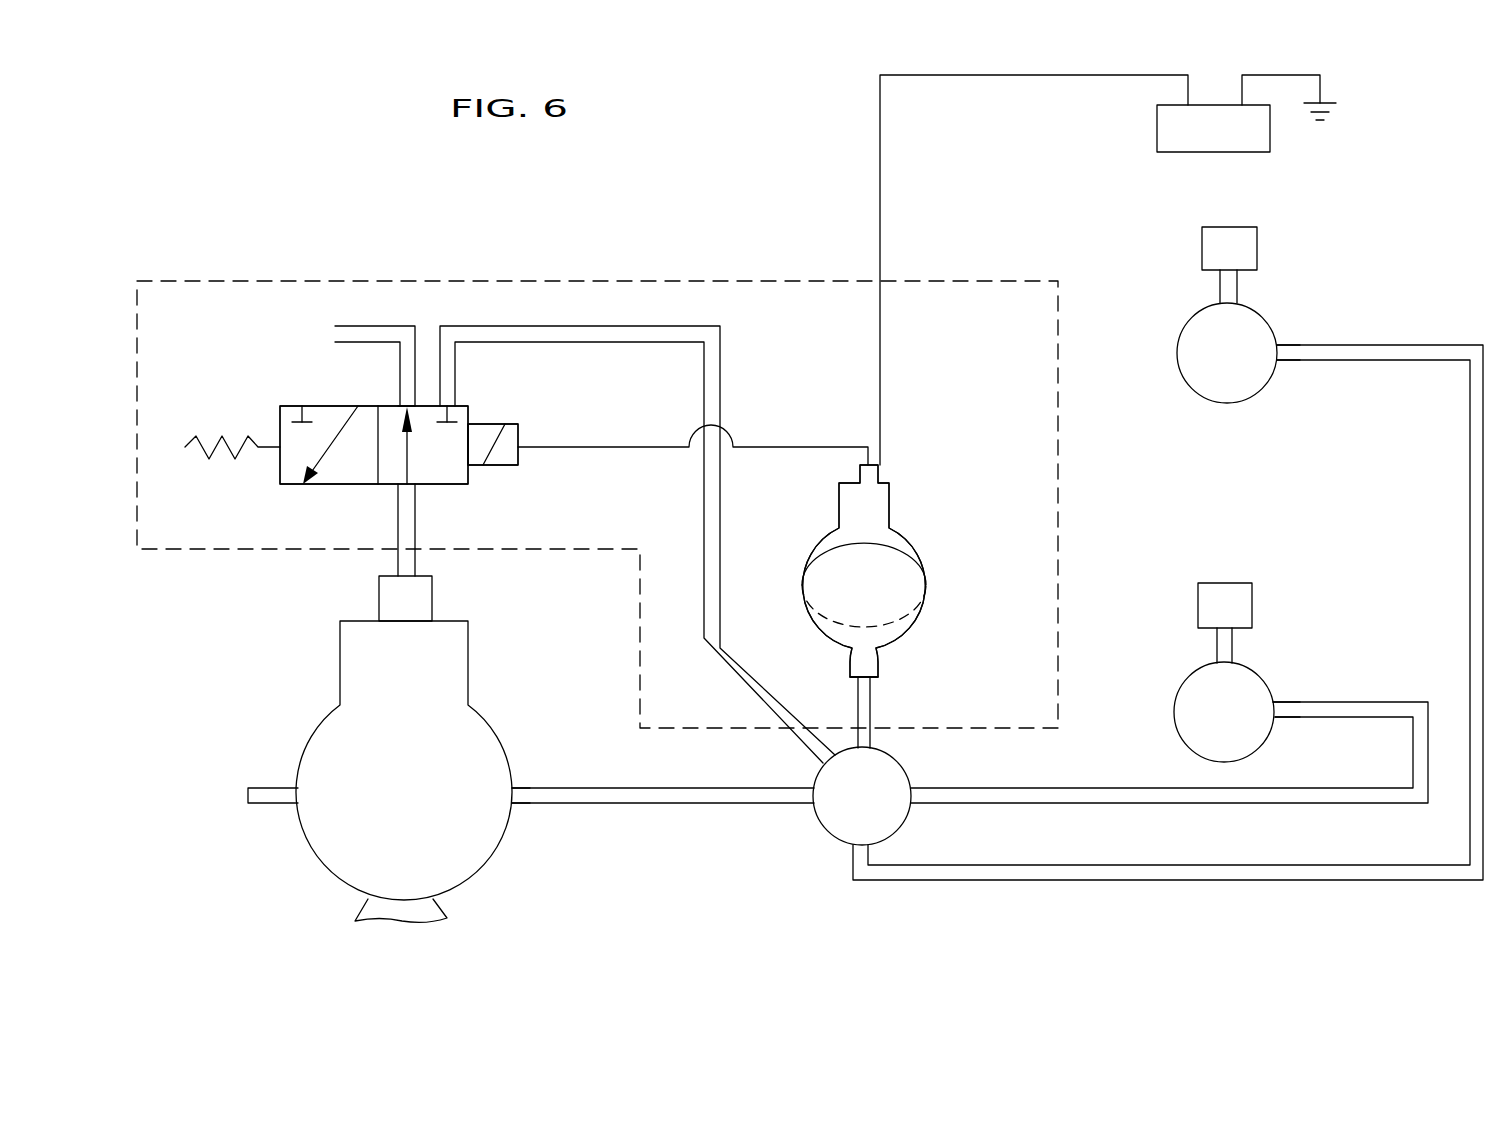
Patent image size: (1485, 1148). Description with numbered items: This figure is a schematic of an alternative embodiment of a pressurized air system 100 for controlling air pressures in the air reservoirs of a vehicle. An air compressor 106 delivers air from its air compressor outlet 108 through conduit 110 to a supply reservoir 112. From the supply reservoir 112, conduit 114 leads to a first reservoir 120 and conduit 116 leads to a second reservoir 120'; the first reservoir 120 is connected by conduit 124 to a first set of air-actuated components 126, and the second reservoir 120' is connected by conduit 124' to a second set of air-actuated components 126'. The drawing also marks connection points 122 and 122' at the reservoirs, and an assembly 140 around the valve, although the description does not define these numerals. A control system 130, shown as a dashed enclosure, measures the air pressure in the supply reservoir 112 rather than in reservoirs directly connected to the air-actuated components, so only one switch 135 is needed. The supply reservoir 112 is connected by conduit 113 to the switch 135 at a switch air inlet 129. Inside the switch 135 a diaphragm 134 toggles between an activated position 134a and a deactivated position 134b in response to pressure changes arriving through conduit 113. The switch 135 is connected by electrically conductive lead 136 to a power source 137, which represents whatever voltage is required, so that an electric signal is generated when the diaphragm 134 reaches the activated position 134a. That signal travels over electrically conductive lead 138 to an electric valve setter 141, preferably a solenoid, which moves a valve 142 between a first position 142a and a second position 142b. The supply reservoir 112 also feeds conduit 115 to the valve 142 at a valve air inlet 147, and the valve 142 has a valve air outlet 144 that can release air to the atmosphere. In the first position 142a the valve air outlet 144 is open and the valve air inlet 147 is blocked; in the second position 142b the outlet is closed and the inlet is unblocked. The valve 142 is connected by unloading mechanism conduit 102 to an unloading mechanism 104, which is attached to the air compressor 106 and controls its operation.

The pressurized air system 100 is at (305, 192).
The unloading mechanism conduit 102 is at (397, 526).
The unloading mechanism 104 is at (379, 595).
The air compressor 106 is at (340, 676).
The air compressor outlet 108 is at (514, 789).
The conduit 110 is at (642, 806).
The supply reservoir 112 is at (823, 832).
The conduit 113 is at (857, 700).
The conduit 114 is at (1158, 882).
The conduit 115 is at (700, 500).
The conduit 116 is at (1152, 805).
The first reservoir 120 is at (1185, 348).
The second reservoir 120' is at (1177, 712).
The actuator port 122 is at (1313, 330).
The second actuator port 122' is at (1342, 682).
The conduit 124 is at (1278, 284).
The conduit 124' is at (1279, 645).
The first set of air-actuated components 126 is at (1269, 247).
The second set of air-actuated components 126' is at (1270, 599).
The switch air inlet 129 is at (880, 681).
The control system 130 is at (636, 262).
The diaphragm 134 is at (818, 538).
The activated position 134a is at (913, 560).
The deactivated position 134b is at (917, 627).
The switch 135 is at (930, 529).
The electrically conductive lead 136 is at (878, 240).
The power source 137 is at (1157, 131).
The electrically conductive lead 138 is at (796, 445).
The valve assembly 140 is at (245, 364).
The electric valve setter 141 is at (516, 425).
The valve 142 is at (258, 415).
The first position 142a is at (468, 485).
The second position 142b is at (280, 485).
The valve air outlet 144 is at (398, 405).
The valve air inlet 147 is at (455, 405).